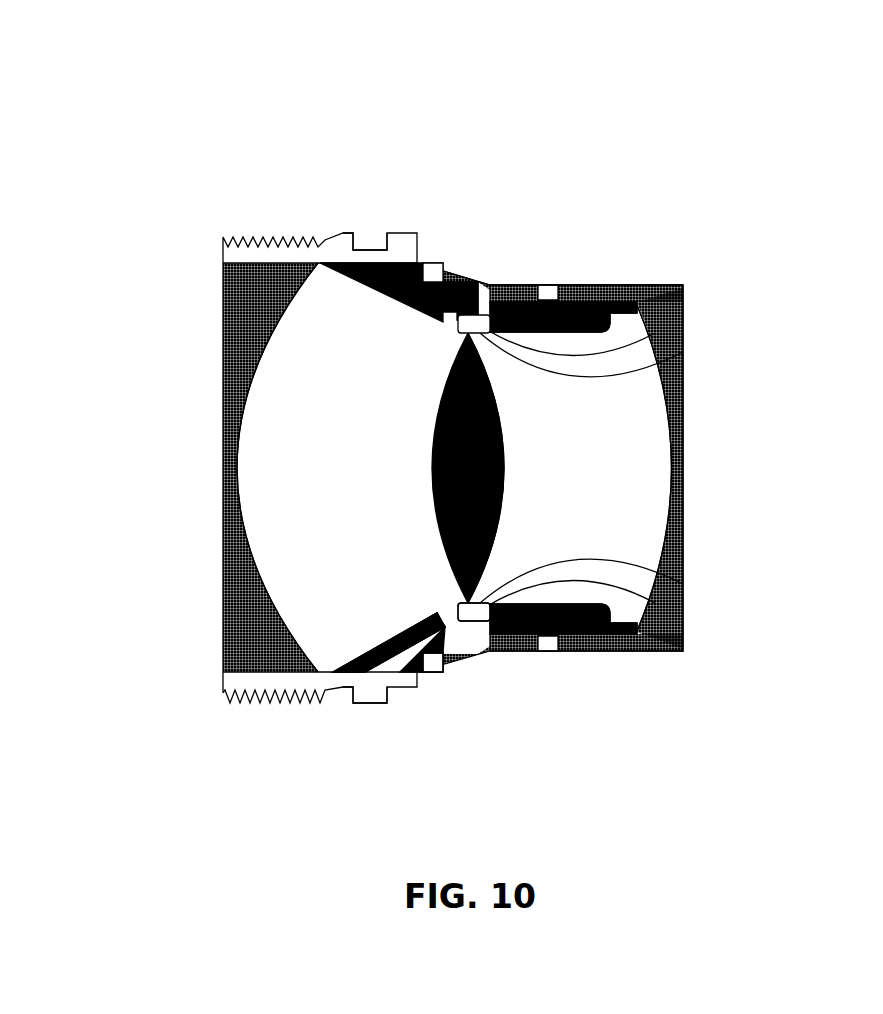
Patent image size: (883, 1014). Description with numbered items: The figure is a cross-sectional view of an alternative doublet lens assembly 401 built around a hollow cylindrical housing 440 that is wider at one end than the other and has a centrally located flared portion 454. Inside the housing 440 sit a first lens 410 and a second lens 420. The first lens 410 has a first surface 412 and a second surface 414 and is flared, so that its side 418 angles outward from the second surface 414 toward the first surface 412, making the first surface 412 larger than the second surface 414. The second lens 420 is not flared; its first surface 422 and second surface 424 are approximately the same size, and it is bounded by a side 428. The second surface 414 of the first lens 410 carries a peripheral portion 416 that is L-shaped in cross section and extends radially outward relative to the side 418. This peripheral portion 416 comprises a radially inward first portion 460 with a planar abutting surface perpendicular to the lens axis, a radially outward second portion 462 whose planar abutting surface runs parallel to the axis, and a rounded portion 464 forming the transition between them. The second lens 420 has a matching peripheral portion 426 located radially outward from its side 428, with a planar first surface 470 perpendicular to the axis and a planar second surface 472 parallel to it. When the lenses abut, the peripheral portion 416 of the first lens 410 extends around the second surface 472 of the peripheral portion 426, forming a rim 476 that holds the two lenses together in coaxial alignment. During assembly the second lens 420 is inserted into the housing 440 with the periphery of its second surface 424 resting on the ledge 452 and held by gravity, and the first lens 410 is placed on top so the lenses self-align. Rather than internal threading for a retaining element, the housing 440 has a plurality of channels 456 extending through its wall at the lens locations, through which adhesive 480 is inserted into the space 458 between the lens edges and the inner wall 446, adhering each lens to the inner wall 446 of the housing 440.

The lens assembly 401 is at (492, 56).
The first lens 410 is at (280, 415).
The first surface 412 is at (237, 465).
The second surface 414 is at (520, 543).
The peripheral portion 416 is at (437, 622).
The side 418 is at (363, 250).
The second lens 420 is at (645, 437).
The first surface 422 is at (530, 542).
The second surface 424 is at (673, 510).
The peripheral portion 426 is at (590, 640).
The side 428 is at (583, 300).
The housing 440 is at (497, 277).
The inner wall 446 is at (240, 300).
The ledge 452 is at (648, 297).
The flared portion 454 is at (458, 660).
The channels 456 is at (430, 263).
The space 458 is at (424, 263).
The first portion 460 is at (466, 608).
The second portion 462 is at (470, 624).
The rounded portion 464 is at (465, 613).
The first surface 470 is at (683, 352).
The second surface 472 is at (655, 333).
The rim 476 is at (453, 270).
The adhesive 480 is at (375, 250).